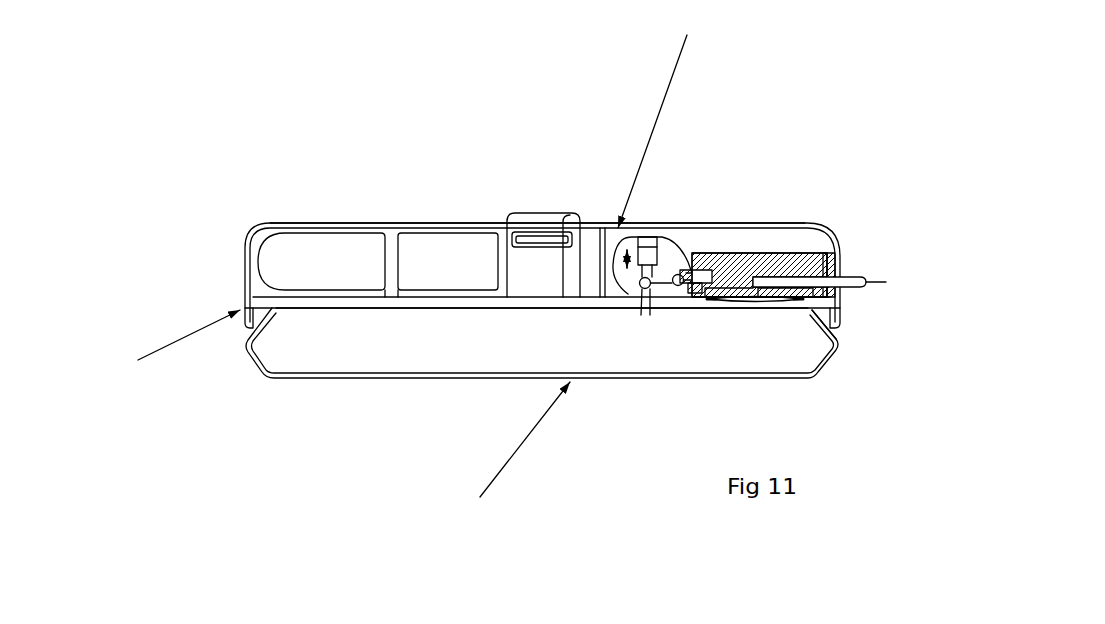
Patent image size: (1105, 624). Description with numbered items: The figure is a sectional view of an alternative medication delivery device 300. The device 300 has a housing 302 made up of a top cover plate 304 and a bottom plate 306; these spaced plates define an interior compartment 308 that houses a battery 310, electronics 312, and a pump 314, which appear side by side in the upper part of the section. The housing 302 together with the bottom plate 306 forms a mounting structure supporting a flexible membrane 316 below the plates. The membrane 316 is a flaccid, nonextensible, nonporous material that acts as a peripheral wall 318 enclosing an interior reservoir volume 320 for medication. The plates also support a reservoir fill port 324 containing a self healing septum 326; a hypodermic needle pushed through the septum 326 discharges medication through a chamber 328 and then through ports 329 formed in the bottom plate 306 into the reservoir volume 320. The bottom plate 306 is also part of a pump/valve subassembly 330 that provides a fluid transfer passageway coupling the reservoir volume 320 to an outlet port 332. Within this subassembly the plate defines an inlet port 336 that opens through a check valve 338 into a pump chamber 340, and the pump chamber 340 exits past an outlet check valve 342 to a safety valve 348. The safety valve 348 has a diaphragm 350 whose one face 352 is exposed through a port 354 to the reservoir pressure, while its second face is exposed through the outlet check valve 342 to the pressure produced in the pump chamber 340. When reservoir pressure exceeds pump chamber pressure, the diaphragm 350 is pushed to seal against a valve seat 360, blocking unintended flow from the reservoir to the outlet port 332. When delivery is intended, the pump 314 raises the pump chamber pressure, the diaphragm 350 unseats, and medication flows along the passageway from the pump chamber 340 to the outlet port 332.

The medication delivery device 300 is at (258, 210).
The housing 302 is at (243, 267).
The top cover plate 304 is at (313, 222).
The bottom plate 306 is at (257, 302).
The interior compartment 308 is at (393, 228).
The battery 310 is at (285, 240).
The electronics 312 is at (432, 232).
The pump 314 is at (685, 237).
The flexible membrane 316 is at (790, 378).
The peripheral wall 318 is at (297, 378).
The reservoir volume 320 is at (378, 352).
The reservoir fill port 324 is at (512, 218).
The self healing septum 326 is at (547, 227).
The chamber 328 is at (567, 232).
The ports 329 is at (563, 298).
The pump/valve subassembly 330 is at (688, 308).
The outlet port 332 is at (840, 270).
The inlet port 336 is at (650, 300).
The check valve 338 is at (645, 300).
The pump chamber 340 is at (655, 262).
The outlet check valve 342 is at (692, 262).
The safety valve 348 is at (834, 252).
The diaphragm 350 is at (792, 307).
The face 352 is at (750, 302).
The port 354 is at (747, 258).
The valve seat 360 is at (800, 252).